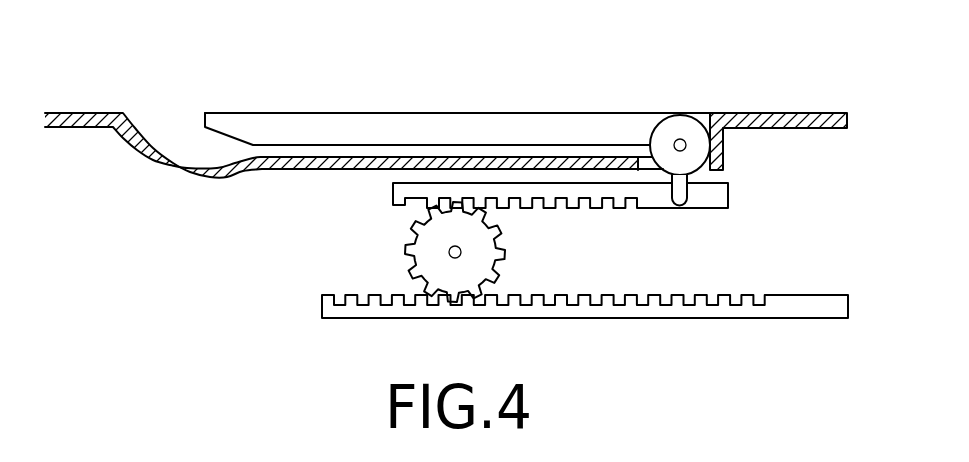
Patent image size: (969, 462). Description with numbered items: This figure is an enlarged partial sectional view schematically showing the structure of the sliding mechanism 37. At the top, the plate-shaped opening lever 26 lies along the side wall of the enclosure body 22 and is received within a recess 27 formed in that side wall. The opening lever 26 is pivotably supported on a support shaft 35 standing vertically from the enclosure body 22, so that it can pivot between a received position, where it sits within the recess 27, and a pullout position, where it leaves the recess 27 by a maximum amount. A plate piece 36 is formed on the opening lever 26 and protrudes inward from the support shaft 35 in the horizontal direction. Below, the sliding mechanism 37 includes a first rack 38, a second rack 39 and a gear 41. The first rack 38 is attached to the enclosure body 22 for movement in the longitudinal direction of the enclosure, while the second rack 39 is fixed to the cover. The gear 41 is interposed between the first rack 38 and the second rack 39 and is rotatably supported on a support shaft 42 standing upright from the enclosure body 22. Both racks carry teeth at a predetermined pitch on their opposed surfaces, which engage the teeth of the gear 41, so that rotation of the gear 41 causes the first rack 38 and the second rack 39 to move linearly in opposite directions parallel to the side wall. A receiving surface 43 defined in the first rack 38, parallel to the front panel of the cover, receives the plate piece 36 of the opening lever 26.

The enclosure body 22 is at (765, 113).
The opening lever 26 is at (312, 113).
The recess 27 is at (146, 130).
The support shaft 35 is at (681, 139).
The plate piece 36 is at (690, 196).
The sliding mechanism 37 is at (309, 270).
The first rack 38 is at (725, 183).
The second rack 39 is at (783, 295).
The gear 41 is at (406, 249).
The support shaft 42 is at (462, 253).
The receiving surface 43 is at (677, 206).